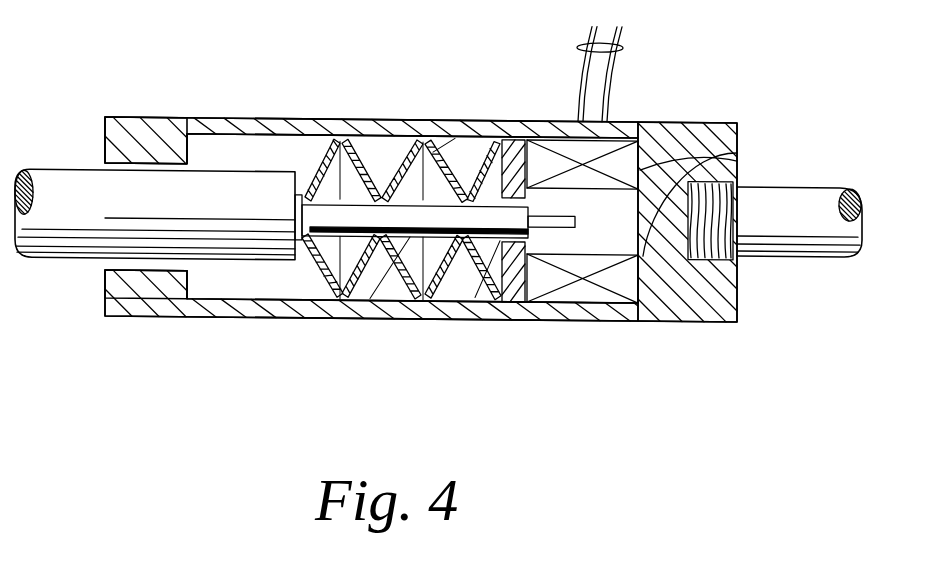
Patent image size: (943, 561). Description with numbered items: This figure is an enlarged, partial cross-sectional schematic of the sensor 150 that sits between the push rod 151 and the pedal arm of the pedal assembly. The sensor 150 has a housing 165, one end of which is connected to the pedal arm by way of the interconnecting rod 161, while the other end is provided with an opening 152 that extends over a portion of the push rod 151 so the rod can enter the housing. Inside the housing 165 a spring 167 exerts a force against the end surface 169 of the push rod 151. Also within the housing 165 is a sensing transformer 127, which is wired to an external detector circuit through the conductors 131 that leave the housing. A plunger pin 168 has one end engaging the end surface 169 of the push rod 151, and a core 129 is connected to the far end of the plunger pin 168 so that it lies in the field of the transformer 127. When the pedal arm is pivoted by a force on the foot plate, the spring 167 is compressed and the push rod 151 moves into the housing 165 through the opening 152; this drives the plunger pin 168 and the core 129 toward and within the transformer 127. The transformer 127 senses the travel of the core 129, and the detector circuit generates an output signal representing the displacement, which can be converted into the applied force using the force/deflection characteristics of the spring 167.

The sensor 150 is at (404, 118).
The housing 165 is at (175, 118).
The opening 152 is at (107, 166).
The plunger pin 168 is at (358, 320).
The push rod 151 is at (78, 247).
The end surface 169 is at (300, 178).
The core 129 is at (575, 221).
The spring 167 is at (463, 136).
The sensing transformer 127 is at (737, 150).
The conductors 131 is at (623, 46).
The interconnecting rod 161 is at (802, 232).